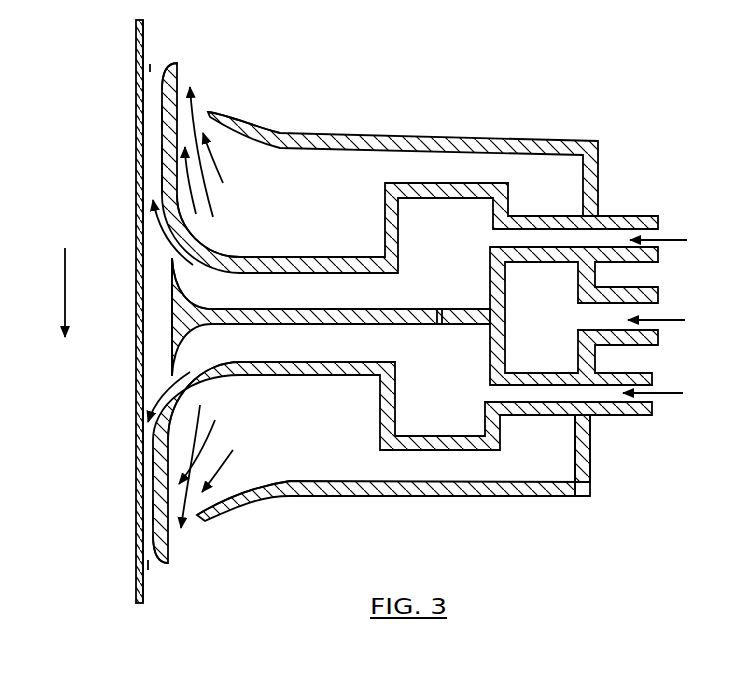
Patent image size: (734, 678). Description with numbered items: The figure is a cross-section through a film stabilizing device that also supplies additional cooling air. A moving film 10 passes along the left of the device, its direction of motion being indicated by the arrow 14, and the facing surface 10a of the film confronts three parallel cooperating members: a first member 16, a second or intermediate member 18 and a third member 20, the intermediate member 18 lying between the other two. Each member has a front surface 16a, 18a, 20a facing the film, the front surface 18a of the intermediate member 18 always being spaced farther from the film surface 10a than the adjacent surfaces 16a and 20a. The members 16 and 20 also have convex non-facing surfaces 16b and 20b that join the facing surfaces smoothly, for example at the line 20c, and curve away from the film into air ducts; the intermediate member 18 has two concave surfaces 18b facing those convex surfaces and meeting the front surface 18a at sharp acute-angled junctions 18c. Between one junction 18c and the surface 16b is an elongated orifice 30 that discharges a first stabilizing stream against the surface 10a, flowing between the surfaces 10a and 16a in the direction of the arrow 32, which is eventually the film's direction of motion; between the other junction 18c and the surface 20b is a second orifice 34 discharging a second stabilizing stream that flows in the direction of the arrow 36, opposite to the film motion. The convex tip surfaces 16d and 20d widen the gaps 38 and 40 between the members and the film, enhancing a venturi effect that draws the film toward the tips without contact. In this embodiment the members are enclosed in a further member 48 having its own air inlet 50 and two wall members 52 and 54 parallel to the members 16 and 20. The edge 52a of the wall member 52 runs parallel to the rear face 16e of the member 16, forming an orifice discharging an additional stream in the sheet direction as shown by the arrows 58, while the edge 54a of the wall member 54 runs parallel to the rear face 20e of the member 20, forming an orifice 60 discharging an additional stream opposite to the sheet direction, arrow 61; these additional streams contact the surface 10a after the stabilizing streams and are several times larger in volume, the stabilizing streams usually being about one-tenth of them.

The film 10 is at (137, 50).
The facing surface of the film 10a is at (145, 35).
The direction of movement 14 is at (65, 287).
The first member 16 is at (287, 367).
The front surface of first member 16a is at (148, 468).
The convex non-facing surface of first member 16b is at (178, 406).
The tip surface of first member 16d is at (155, 552).
The rear face of first member 16e is at (160, 512).
The second member 18 is at (277, 315).
The front surface of intermediate member 18a is at (172, 297).
The concave surfaces of intermediate member 18b is at (203, 300).
The acute-angled junctions 18c is at (172, 258).
The third member 20 is at (183, 220).
The front surface of third member 20a is at (168, 157).
The convex non-facing surface of third member 20b is at (218, 247).
The junction line of third member 20c is at (170, 186).
The tip surface of third member 20d is at (178, 70).
The rear face of third member 20e is at (165, 117).
The first orifice 30 is at (197, 370).
The first stabilizing stream direction arrow 32 is at (157, 390).
The second orifice 34 is at (172, 234).
The second stabilizing stream direction arrow 36 is at (160, 223).
The gap 38 is at (148, 565).
The gap 40 is at (150, 68).
The further member 48 is at (510, 488).
The air inlet 50 is at (647, 293).
The wall member 52 is at (343, 487).
The edge of wall member 52a is at (198, 516).
The wall member 54 is at (402, 143).
The edge of wall member 54a is at (228, 112).
The additional air stream arrows 58 is at (242, 462).
The air discharge orifice 60 is at (197, 112).
The additional air stream arrow 61 is at (226, 150).